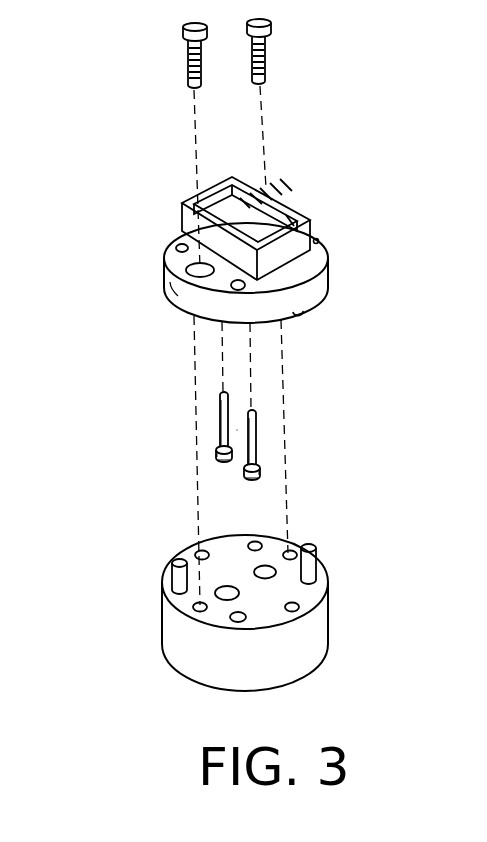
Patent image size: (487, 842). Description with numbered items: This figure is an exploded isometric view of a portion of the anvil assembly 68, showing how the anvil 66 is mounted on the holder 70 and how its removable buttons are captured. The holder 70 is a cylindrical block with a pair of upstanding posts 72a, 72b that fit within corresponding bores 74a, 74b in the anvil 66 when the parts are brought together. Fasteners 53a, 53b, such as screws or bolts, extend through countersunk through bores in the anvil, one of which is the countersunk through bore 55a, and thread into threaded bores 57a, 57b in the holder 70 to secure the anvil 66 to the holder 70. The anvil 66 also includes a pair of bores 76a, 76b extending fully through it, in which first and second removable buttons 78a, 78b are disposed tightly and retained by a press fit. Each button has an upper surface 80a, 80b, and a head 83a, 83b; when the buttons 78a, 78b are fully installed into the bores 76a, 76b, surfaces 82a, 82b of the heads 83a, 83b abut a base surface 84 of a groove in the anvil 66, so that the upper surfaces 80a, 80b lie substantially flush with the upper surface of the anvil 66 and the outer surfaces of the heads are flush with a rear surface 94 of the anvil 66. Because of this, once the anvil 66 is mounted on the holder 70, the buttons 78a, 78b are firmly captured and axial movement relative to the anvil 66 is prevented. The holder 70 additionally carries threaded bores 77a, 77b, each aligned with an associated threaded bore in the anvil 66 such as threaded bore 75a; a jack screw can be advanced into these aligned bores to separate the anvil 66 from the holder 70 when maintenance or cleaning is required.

The fastener 53a is at (187, 68).
The fastener 53b is at (268, 68).
The countersunk through bore 55a is at (166, 262).
The rear surface 94 is at (178, 312).
The bore 76a is at (215, 207).
The bore 76b is at (303, 220).
The bore 74a is at (180, 246).
The bore 74b is at (319, 244).
The anvil 66 is at (198, 266).
The threaded bore 75a is at (245, 290).
The base surface 84 is at (300, 312).
The upper surface 80a is at (223, 393).
The upper surface 80b is at (254, 410).
The removable button 78a is at (221, 425).
The removable button 78b is at (257, 440).
The surface 82a is at (219, 455).
The surface 82b is at (262, 468).
The head 83a is at (218, 462).
The head 83b is at (255, 479).
The anvil assembly 68 is at (190, 492).
The holder 70 is at (162, 617).
The upstanding post 72a is at (176, 580).
The upstanding post 72b is at (318, 567).
The threaded bore 57a is at (200, 608).
The threaded bore 57b is at (296, 550).
The threaded bore 77a is at (248, 626).
The threaded bore 77b is at (262, 548).